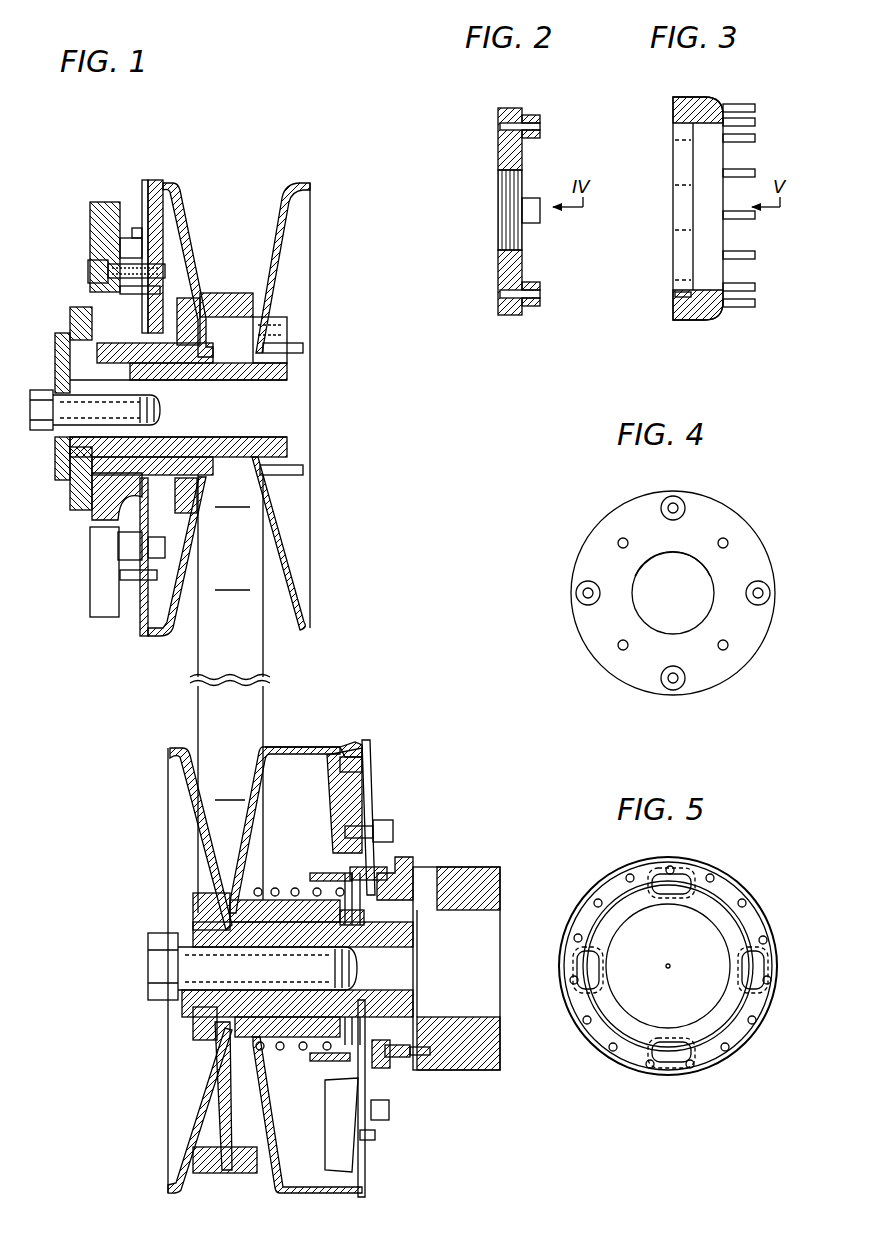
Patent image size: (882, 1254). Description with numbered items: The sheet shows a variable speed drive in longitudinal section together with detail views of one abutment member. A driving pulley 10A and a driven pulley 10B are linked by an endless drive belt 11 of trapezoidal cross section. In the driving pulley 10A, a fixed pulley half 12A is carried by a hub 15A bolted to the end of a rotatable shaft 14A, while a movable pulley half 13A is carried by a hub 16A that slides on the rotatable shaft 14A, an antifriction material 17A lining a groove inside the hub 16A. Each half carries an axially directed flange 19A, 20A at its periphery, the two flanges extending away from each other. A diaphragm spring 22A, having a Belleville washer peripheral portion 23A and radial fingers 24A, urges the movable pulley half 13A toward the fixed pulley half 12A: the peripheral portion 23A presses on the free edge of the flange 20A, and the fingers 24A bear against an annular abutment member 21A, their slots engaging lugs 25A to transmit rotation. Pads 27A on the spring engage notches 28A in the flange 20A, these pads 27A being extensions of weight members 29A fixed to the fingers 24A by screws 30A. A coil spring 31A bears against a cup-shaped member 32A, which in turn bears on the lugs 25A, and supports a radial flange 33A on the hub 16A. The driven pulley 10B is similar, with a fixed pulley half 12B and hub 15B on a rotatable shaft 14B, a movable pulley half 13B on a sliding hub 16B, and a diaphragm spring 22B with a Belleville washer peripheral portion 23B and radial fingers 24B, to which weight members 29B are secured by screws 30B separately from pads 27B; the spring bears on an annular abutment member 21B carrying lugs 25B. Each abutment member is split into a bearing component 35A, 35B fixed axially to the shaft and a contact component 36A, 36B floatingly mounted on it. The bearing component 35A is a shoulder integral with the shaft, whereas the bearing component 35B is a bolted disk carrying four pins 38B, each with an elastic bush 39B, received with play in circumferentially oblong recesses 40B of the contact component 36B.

In FIG. 1, the driving pulley 10A is at (160, 1105).
In FIG. 1, the driven pulley 10B is at (268, 195).
In FIG. 1, the endless drive belt 11 is at (268, 670).
In FIG. 1, the fixed pulley half 12A is at (203, 840).
In FIG. 1, the fixed pulley half 12B is at (272, 235).
In FIG. 1, the movable pulley half 13A is at (250, 850).
In FIG. 1, the movable pulley half 13B is at (182, 235).
In FIG. 1, the rotatable shaft 14A is at (490, 1073).
In FIG. 1, the rotatable shaft 14B is at (290, 385).
In FIG. 1, the hub 15A is at (195, 910).
In FIG. 1, the hub 15B is at (303, 348).
In FIG. 1, the hub 16A is at (290, 933).
In FIG. 1, the hub 16B is at (187, 322).
In FIG. 1, the antifriction material 17A is at (245, 1005).
In FIG. 1, the axially directed flange 19A is at (170, 755).
In FIG. 1, the axially directed flange 20A is at (296, 745).
In FIG. 1, the annular abutment member 21A is at (407, 860).
In FIG. 1, the annular abutment member 21B is at (135, 520).
In FIG. 1, the diaphragm spring 22A is at (372, 766).
In FIG. 1, the diaphragm spring 22B is at (143, 198).
In FIG. 1, the Belleville washer peripheral portion 23A is at (360, 754).
In FIG. 1, the Belleville washer peripheral portion 23B is at (145, 636).
In FIG. 1, the radial fingers 24A is at (378, 868).
In FIG. 1, the radial fingers 24B is at (162, 470).
In FIG. 1, the lugs 25A is at (330, 875).
In FIG. 1, the lugs 25B is at (185, 295).
In FIG. 3, the lugs 25B is at (755, 122).
In FIG. 5, the lugs 25B is at (578, 935).
In FIG. 1, the pads 27A is at (350, 740).
In FIG. 1, the pads 27B is at (160, 180).
In FIG. 1, the notches 28A is at (328, 770).
In FIG. 1, the weight members 29A is at (328, 800).
In FIG. 1, the weight members 29B is at (95, 218).
In FIG. 1, the screws 30A is at (380, 822).
In FIG. 1, the screws 30B is at (88, 270).
In FIG. 1, the coil spring 31A is at (282, 1050).
In FIG. 1, the cup-shaped member 32A is at (325, 1062).
In FIG. 1, the radial flange 33A is at (245, 1063).
In FIG. 1, the bearing component 35A is at (420, 1060).
In FIG. 1, the bearing component 35B is at (78, 308).
In FIG. 2, the bearing component 35B is at (498, 268).
In FIG. 4, the bearing component 35B is at (725, 495).
In FIG. 1, the contact component 36A is at (348, 1048).
In FIG. 1, the contact component 36B is at (95, 515).
In FIG. 3, the contact component 36B is at (673, 322).
In FIG. 5, the contact component 36B is at (755, 878).
In FIG. 2, the pins 38B is at (540, 132).
In FIG. 4, the pins 38B is at (668, 508).
In FIG. 2, the elastic bush 39B is at (540, 118).
In FIG. 4, the elastic bush 39B is at (668, 500).
In FIG. 3, the recesses 40B is at (678, 296).
In FIG. 5, the recesses 40B is at (690, 895).